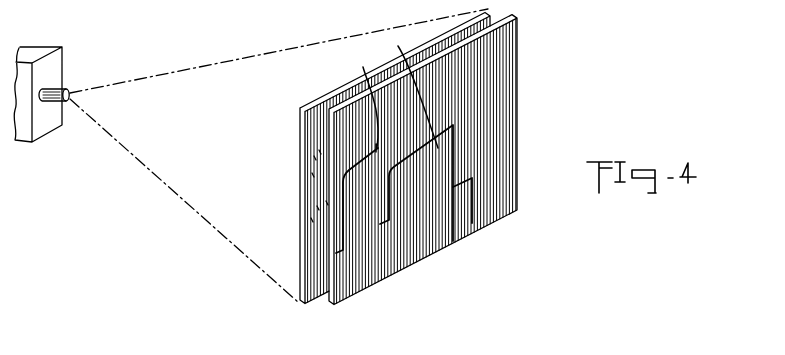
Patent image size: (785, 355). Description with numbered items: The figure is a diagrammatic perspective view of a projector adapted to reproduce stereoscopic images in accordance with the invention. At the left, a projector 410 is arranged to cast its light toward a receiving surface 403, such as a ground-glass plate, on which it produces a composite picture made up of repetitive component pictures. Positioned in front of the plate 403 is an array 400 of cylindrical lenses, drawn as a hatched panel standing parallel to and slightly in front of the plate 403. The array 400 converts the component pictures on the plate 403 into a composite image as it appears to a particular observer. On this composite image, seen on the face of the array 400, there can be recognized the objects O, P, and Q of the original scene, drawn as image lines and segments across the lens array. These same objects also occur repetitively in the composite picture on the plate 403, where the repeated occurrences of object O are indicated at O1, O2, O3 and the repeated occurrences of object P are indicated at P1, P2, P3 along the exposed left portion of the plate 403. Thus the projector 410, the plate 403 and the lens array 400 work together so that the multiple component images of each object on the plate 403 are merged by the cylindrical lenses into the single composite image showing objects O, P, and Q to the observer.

The projector 410 is at (43, 47).
The receiving surface 403 is at (340, 89).
The array of cylindrical lenses 400 is at (515, 118).
The object P is at (368, 102).
The object O is at (412, 92).
The object Q is at (468, 206).
The repetitive occurrence of object P P1 is at (313, 175).
The repetitive occurrence of object P P2 is at (315, 158).
The repetitive occurrence of object P P3 is at (320, 152).
The repetitive occurrence of object O O1 is at (312, 220).
The repetitive occurrence of object O O2 is at (318, 208).
The repetitive occurrence of object O O3 is at (327, 203).